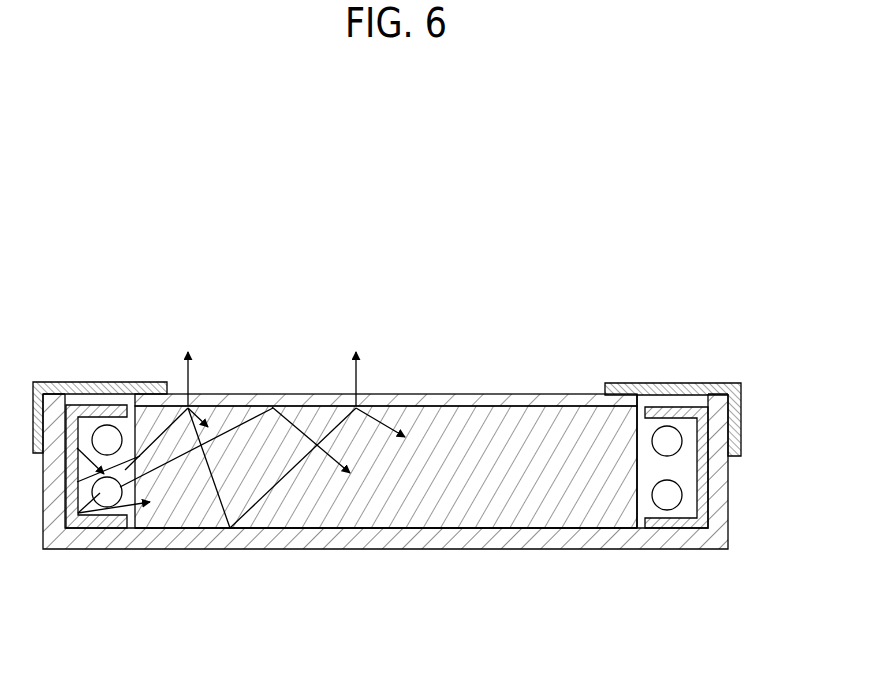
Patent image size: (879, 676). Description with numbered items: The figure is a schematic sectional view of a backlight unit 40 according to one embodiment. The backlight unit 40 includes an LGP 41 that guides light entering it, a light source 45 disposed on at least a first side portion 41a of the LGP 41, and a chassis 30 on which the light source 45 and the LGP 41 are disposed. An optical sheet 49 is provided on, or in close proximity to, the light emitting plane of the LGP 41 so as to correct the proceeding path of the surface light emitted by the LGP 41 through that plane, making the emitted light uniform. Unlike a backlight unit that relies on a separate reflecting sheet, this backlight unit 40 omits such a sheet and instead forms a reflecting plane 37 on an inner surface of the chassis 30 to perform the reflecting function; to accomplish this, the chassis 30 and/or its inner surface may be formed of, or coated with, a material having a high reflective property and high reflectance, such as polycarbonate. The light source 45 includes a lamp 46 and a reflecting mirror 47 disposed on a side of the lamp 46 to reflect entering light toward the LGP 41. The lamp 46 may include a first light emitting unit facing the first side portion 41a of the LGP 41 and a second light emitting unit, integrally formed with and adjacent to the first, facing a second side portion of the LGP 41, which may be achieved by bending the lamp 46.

The chassis 30 is at (648, 551).
The reflecting plane 37 is at (412, 529).
The backlight unit 40 is at (442, 437).
The LGP 41 is at (550, 420).
The first side portion 41a is at (638, 427).
The light source 45 is at (748, 467).
The lamp 46 is at (667, 495).
The reflecting mirror 47 is at (700, 448).
The optical sheet 49 is at (483, 402).